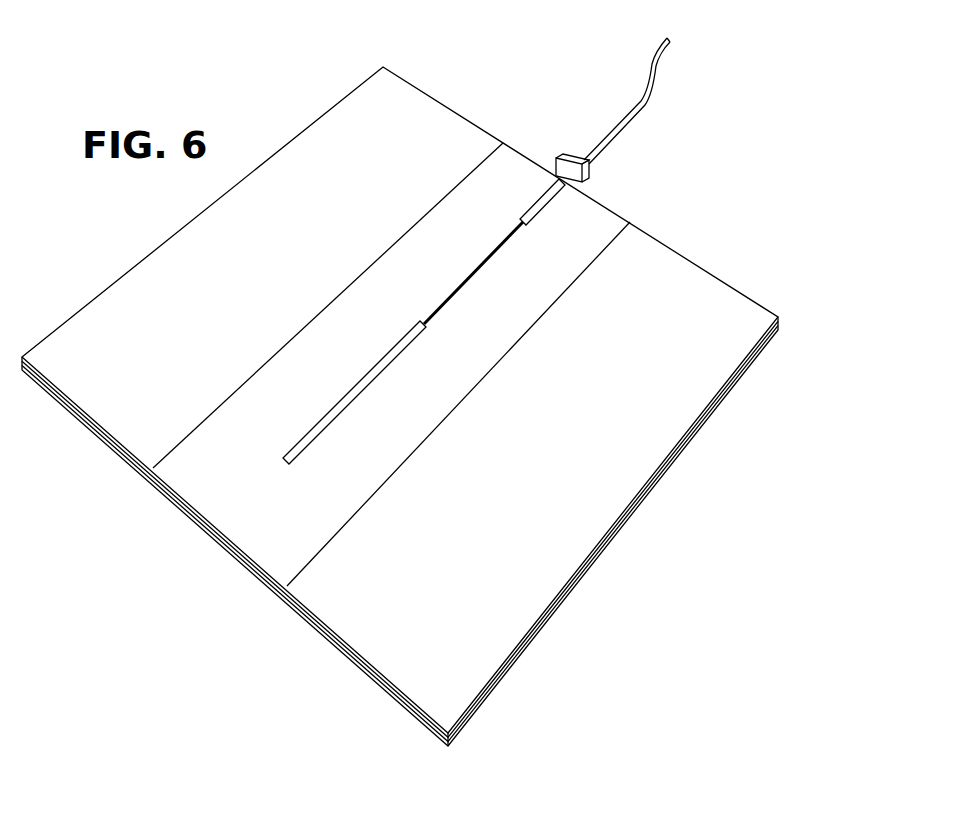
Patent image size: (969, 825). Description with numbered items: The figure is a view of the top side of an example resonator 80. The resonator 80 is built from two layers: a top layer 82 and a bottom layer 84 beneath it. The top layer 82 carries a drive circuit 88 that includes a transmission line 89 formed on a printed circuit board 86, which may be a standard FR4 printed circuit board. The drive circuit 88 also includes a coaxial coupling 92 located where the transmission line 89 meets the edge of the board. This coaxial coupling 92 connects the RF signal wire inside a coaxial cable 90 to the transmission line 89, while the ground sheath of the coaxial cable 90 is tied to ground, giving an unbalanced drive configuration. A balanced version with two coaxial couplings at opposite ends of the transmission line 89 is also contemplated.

The resonator 80 is at (503, 251).
The top layer 82 is at (683, 288).
The bottom layer 84 is at (720, 410).
The printed circuit board 86 is at (623, 250).
The drive circuit 88 is at (518, 180).
The transmission line 89 is at (595, 180).
The coaxial cable 90 is at (663, 63).
The coaxial coupling 92 is at (569, 157).